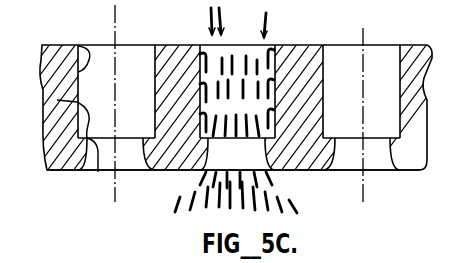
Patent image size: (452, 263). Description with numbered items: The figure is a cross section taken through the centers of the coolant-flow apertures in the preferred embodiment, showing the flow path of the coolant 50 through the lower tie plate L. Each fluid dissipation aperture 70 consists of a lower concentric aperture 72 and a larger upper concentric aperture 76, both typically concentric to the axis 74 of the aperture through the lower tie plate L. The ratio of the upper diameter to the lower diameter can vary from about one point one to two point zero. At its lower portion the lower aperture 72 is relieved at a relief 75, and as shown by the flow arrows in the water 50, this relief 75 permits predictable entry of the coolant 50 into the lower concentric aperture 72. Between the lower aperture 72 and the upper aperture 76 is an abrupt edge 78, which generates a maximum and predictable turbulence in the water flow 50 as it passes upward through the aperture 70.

The coolant 50 is at (252, 34).
The fluid dissipation aperture 70 is at (110, 60).
The lower concentric aperture 72 is at (98, 171).
The axis 74 is at (118, 44).
The relief 75 is at (73, 172).
The upper concentric aperture 76 is at (80, 44).
The abrupt edge 78 is at (57, 100).
The lower tie plate L is at (167, 182).